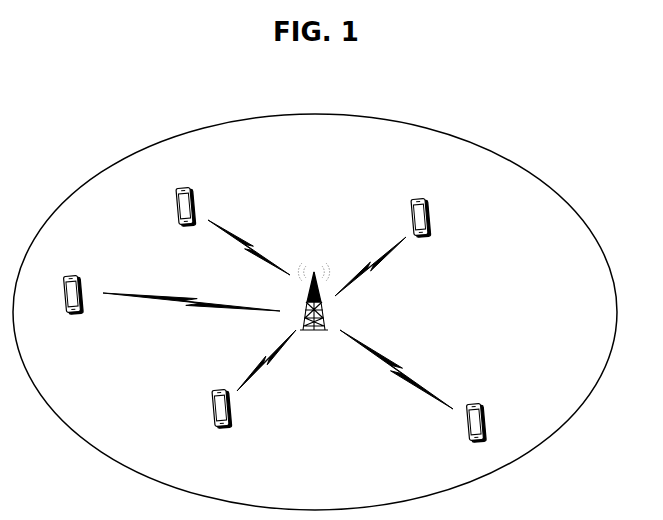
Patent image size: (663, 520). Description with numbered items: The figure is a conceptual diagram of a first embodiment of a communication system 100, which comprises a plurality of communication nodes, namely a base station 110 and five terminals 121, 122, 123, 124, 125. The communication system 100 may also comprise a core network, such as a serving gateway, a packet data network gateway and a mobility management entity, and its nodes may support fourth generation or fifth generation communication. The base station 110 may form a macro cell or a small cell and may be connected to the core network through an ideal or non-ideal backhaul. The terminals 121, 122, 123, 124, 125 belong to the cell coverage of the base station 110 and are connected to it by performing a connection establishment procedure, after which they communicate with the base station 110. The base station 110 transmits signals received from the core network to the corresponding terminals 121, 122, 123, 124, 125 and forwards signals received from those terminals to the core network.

The communication system 100 is at (327, 94).
The base station 110 is at (315, 271).
The terminal 121 is at (183, 187).
The terminal 122 is at (419, 197).
The terminal 123 is at (474, 401).
The terminal 124 is at (220, 389).
The terminal 125 is at (73, 273).